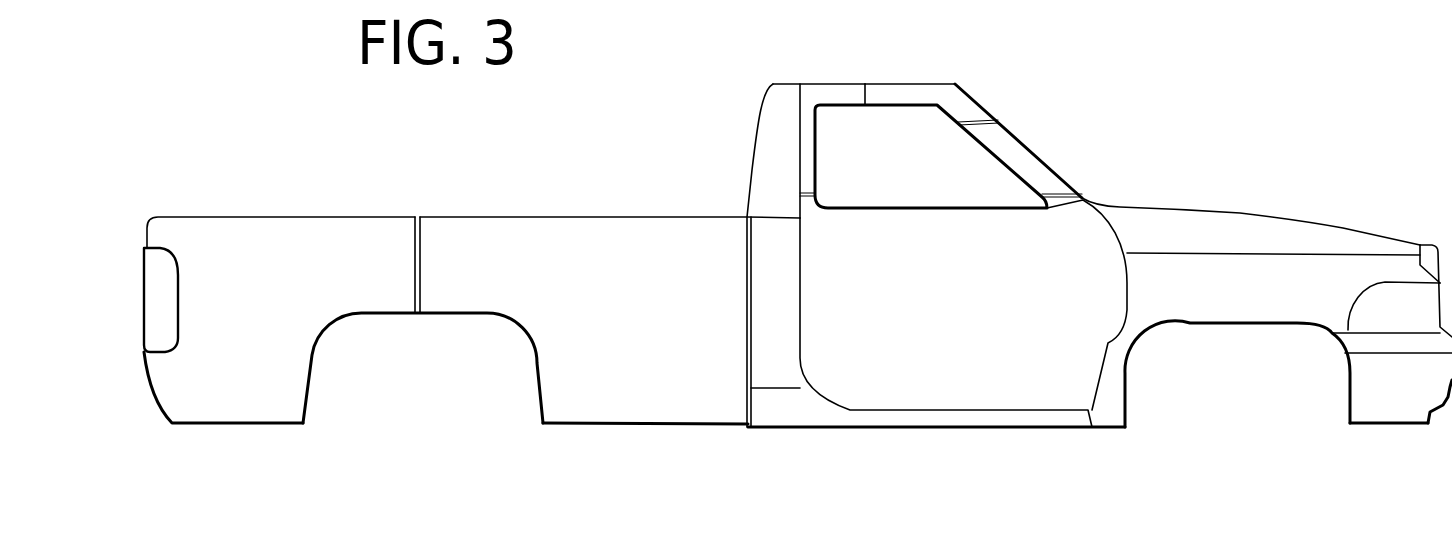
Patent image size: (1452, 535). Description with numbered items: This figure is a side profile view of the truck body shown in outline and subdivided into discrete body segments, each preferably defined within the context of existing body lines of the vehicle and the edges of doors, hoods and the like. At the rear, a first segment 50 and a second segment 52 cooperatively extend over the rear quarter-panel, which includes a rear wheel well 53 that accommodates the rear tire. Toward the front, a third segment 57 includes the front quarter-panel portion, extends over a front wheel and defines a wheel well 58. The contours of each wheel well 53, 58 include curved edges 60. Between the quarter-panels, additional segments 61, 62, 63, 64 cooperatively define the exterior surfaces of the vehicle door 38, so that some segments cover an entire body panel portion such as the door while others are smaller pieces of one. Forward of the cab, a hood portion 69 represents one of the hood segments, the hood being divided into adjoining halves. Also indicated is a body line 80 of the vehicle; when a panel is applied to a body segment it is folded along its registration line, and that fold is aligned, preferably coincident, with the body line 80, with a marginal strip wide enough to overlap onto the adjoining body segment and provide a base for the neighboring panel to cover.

The vehicle door 38 is at (944, 388).
The first segment 50 is at (272, 269).
The second segment 52 is at (556, 284).
The rear wheel well 53 is at (411, 346).
The third segment 57 is at (1254, 310).
The wheel well 58 is at (1199, 420).
The curved edges 60 is at (482, 303).
The additional segment 61 is at (930, 320).
The additional segment 62 is at (822, 97).
The additional segment 63 is at (940, 97).
The additional segment 64 is at (1015, 153).
The hood portion 69 is at (1238, 214).
The body line 80 is at (1343, 228).